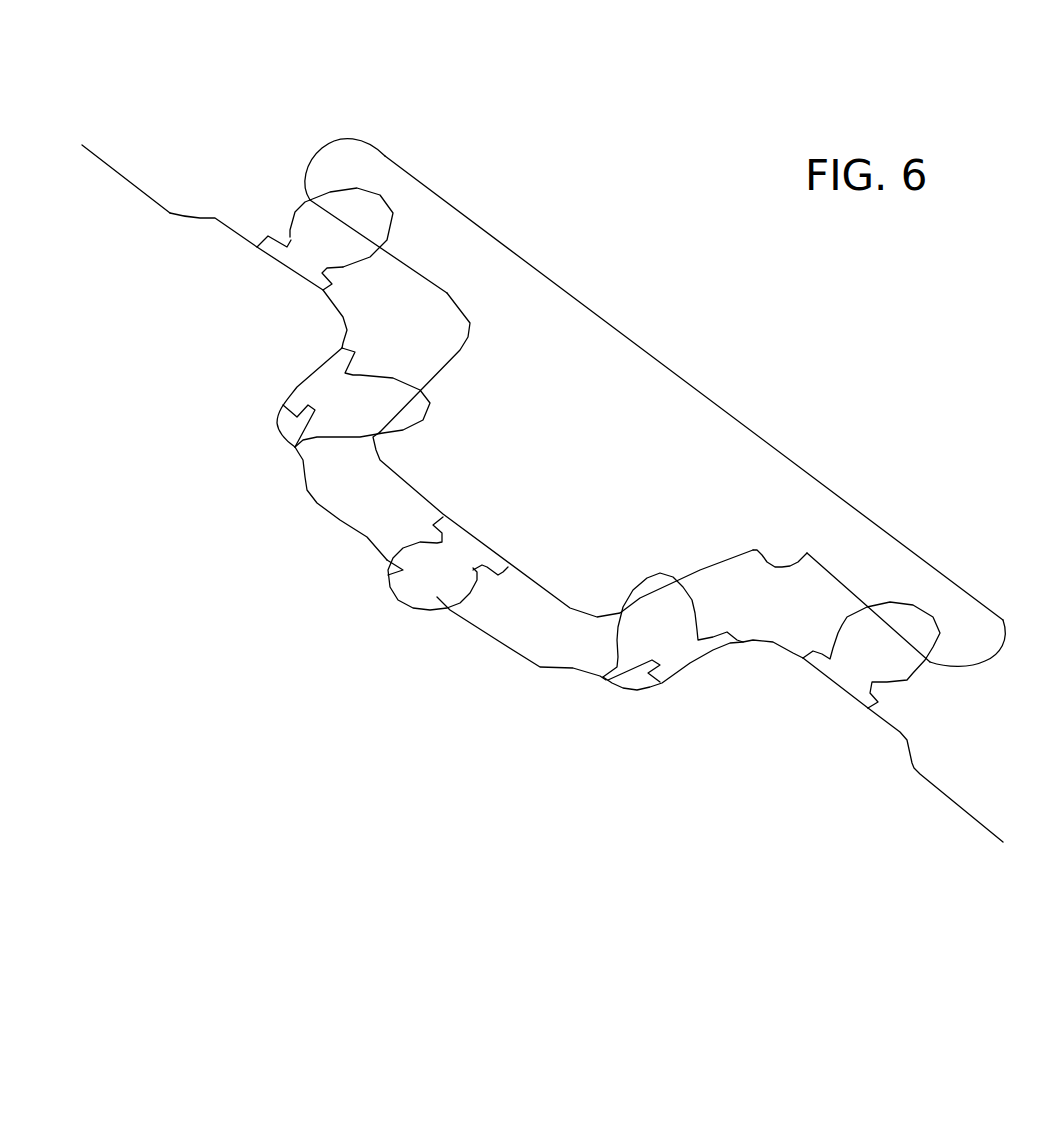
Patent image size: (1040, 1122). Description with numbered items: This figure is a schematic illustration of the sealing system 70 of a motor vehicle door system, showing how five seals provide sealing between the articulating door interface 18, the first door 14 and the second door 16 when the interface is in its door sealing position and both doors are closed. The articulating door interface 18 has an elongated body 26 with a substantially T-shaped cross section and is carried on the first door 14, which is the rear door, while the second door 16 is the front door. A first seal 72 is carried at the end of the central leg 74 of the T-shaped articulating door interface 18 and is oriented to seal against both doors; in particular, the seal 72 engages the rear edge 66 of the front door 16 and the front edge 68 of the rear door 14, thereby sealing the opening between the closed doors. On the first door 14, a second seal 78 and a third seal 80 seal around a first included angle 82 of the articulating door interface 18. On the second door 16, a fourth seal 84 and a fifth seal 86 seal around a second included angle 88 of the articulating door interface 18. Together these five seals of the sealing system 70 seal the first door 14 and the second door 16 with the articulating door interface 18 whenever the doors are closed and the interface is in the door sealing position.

The first door 14 is at (217, 220).
The second door 16 is at (908, 760).
The articulating door interface 18 is at (842, 411).
The elongated body 26 is at (865, 562).
The rear edge 66 is at (437, 597).
The front edge 68 is at (400, 568).
The sealing system 70 is at (219, 203).
The first seal 72 is at (413, 580).
The central leg 74 is at (403, 487).
The second seal 78 is at (305, 240).
The third seal 80 is at (348, 408).
The first included angle 82 is at (448, 297).
The fourth seal 84 is at (642, 633).
The fifth seal 86 is at (887, 660).
The second included angle 88 is at (793, 562).